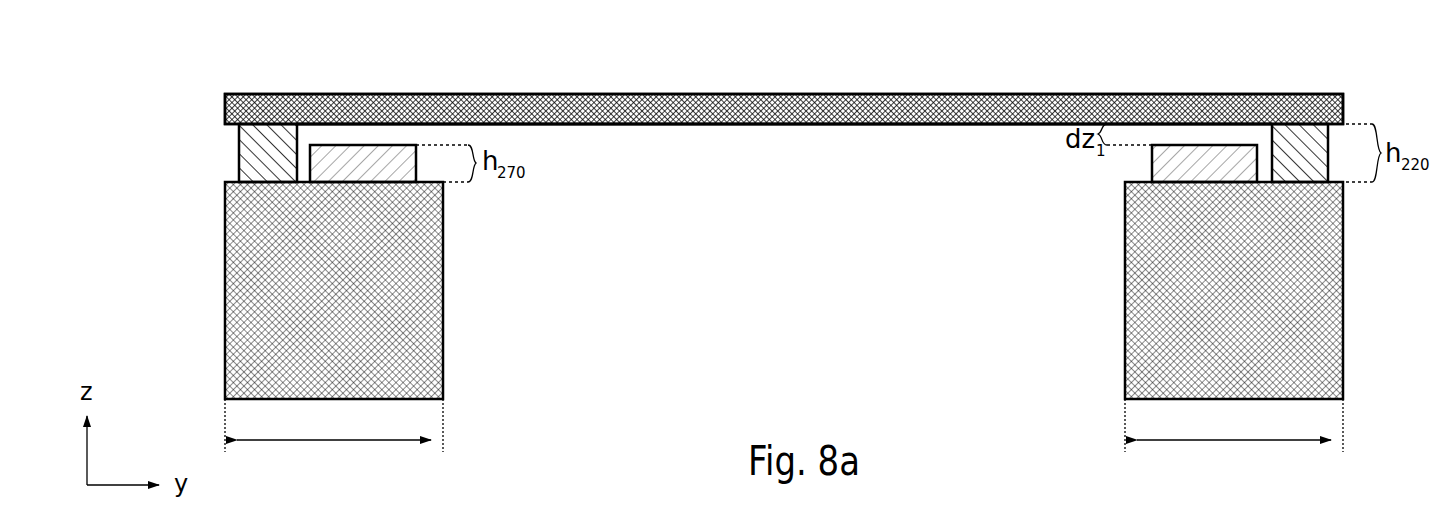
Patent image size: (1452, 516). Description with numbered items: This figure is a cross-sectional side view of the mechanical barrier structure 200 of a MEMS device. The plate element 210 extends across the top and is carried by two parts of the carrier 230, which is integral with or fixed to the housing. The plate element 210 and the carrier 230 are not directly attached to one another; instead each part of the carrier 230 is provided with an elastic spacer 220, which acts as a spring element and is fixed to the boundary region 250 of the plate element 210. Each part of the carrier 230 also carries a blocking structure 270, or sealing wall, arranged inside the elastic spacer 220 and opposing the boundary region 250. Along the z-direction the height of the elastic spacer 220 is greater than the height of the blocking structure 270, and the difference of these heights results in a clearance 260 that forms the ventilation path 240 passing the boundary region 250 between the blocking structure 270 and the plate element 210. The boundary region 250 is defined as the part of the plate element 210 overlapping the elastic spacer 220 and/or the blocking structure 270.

The mechanical barrier structure 200 is at (793, 84).
The plate element 210 is at (783, 125).
The elastic spacer 220 is at (240, 142).
The carrier 230 is at (456, 304).
The ventilation path 240 is at (410, 134).
The boundary region 250 is at (784, 425).
The clearance 260 is at (784, 145).
The blocking structure 270 is at (430, 170).